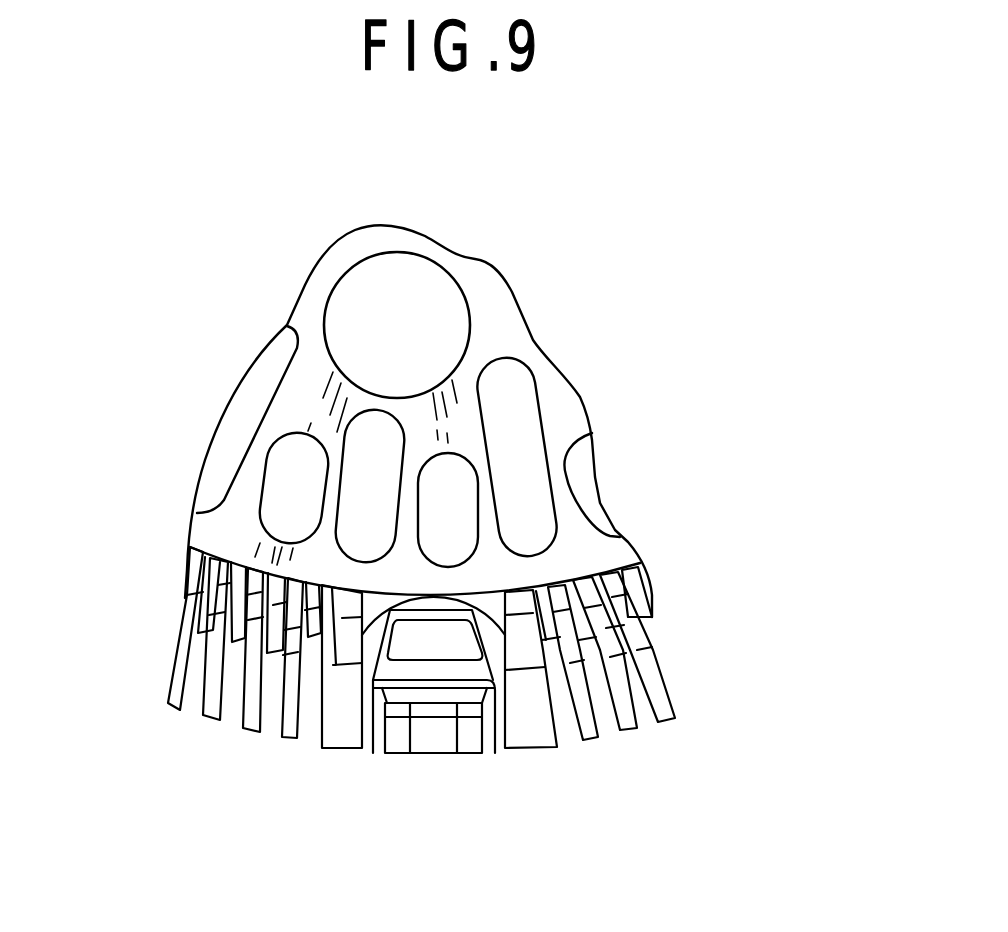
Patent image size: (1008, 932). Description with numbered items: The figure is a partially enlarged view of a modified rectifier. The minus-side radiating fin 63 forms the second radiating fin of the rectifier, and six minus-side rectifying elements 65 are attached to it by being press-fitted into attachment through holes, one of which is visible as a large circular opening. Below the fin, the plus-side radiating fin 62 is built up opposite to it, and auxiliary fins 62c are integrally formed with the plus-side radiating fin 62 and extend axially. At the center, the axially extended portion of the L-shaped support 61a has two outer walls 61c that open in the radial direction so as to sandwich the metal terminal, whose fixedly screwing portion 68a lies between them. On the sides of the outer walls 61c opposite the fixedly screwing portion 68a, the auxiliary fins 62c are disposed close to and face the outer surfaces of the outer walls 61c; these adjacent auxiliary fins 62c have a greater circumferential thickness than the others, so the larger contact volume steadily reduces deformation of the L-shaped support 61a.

The minus-side radiating fin 63 is at (556, 403).
The minus-side rectifying element 65 is at (425, 290).
The plus-side radiating fin 62 is at (187, 592).
The auxiliary fin 62c is at (173, 697).
The outer wall 61c is at (367, 757).
The L-shaped support 61a is at (483, 672).
The fixedly screwing portion 68a is at (428, 758).